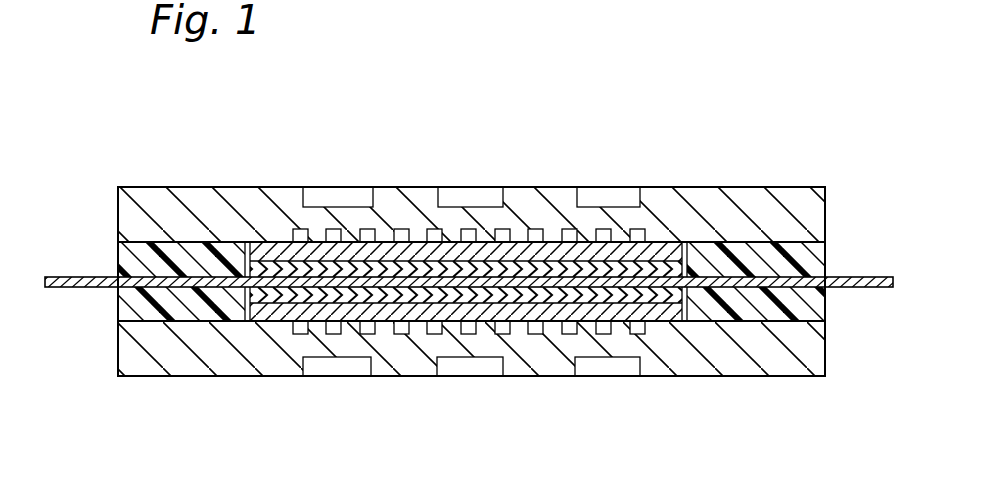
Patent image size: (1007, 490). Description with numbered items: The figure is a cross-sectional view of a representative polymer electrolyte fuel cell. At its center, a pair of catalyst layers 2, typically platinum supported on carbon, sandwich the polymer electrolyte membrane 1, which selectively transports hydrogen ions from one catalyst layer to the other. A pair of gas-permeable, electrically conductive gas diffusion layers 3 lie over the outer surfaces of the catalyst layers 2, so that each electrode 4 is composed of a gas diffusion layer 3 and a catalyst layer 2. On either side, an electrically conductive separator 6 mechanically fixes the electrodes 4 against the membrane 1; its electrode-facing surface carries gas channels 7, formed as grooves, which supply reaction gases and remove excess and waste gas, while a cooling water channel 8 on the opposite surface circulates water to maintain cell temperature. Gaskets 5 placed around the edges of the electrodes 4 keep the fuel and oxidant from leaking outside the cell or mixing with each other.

The polymer electrolyte membrane 1 is at (860, 288).
The catalyst layer 2 is at (665, 262).
The gas diffusion layer 3 is at (598, 237).
The electrode 4 is at (590, 118).
The gasket 5 is at (805, 262).
The separator 6 is at (208, 203).
The gas channel 7 is at (366, 236).
The cooling water channel 8 is at (483, 199).